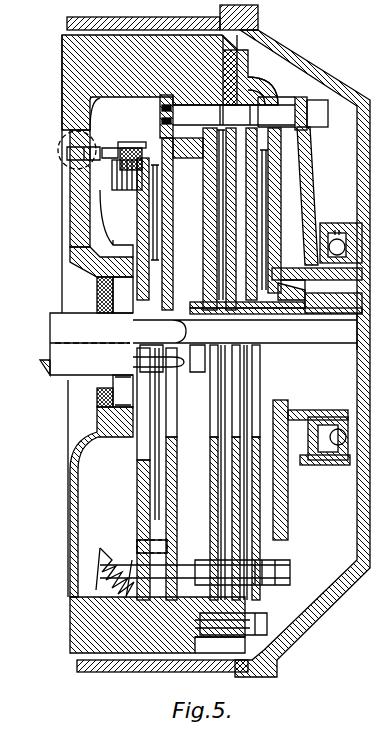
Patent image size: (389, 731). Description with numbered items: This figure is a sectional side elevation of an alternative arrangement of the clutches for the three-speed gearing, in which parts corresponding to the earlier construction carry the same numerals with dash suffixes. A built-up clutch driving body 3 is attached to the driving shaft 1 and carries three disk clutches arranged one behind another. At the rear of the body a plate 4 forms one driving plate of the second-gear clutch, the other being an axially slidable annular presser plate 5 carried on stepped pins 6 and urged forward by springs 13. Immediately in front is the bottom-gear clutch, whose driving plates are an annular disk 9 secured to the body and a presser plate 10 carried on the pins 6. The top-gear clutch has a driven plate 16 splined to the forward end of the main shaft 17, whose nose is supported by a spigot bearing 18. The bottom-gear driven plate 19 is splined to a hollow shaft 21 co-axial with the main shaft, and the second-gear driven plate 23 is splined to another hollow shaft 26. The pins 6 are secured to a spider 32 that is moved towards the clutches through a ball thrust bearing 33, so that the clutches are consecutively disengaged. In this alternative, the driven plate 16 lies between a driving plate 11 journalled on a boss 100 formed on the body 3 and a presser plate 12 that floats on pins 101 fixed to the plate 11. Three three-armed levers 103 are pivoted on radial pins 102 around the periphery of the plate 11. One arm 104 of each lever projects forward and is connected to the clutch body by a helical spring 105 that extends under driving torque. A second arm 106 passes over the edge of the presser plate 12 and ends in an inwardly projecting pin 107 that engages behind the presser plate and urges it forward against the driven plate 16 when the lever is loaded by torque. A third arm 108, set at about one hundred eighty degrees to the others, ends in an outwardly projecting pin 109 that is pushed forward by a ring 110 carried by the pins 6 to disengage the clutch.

The driving shaft 1 is at (50, 312).
The clutch driving body 3 is at (62, 80).
The plate 4 is at (262, 84).
The presser plate 5 is at (268, 143).
The stepped pins 6 is at (293, 100).
The annular disk 9 is at (226, 52).
The presser plate 10 is at (203, 153).
The driving plate 11 is at (126, 196).
The presser plate 12 is at (173, 213).
The springs 13 is at (112, 552).
The top-gear driven plate 16 is at (150, 268).
The main shaft 17 is at (245, 340).
The spigot bearing 18 is at (112, 378).
The bottom-gear driven plate 19 is at (218, 240).
The hollow shaft 21 is at (268, 318).
The second-gear driven plate 23 is at (270, 258).
The hollow shaft 26 is at (290, 320).
The spider 32 is at (314, 160).
The ball thrust bearing 33 is at (336, 228).
The boss 100 is at (112, 242).
The pins 101 is at (190, 545).
The radial pins 102 is at (121, 142).
The three-armed levers 103 is at (120, 150).
The arm 104 is at (66, 153).
The helical spring 105 is at (68, 130).
The second arm 106 is at (182, 143).
The inwardly projecting pin 107 is at (172, 178).
The third arm 108 is at (145, 143).
The outwardly projecting pin 109 is at (158, 122).
The ring 110 is at (166, 103).